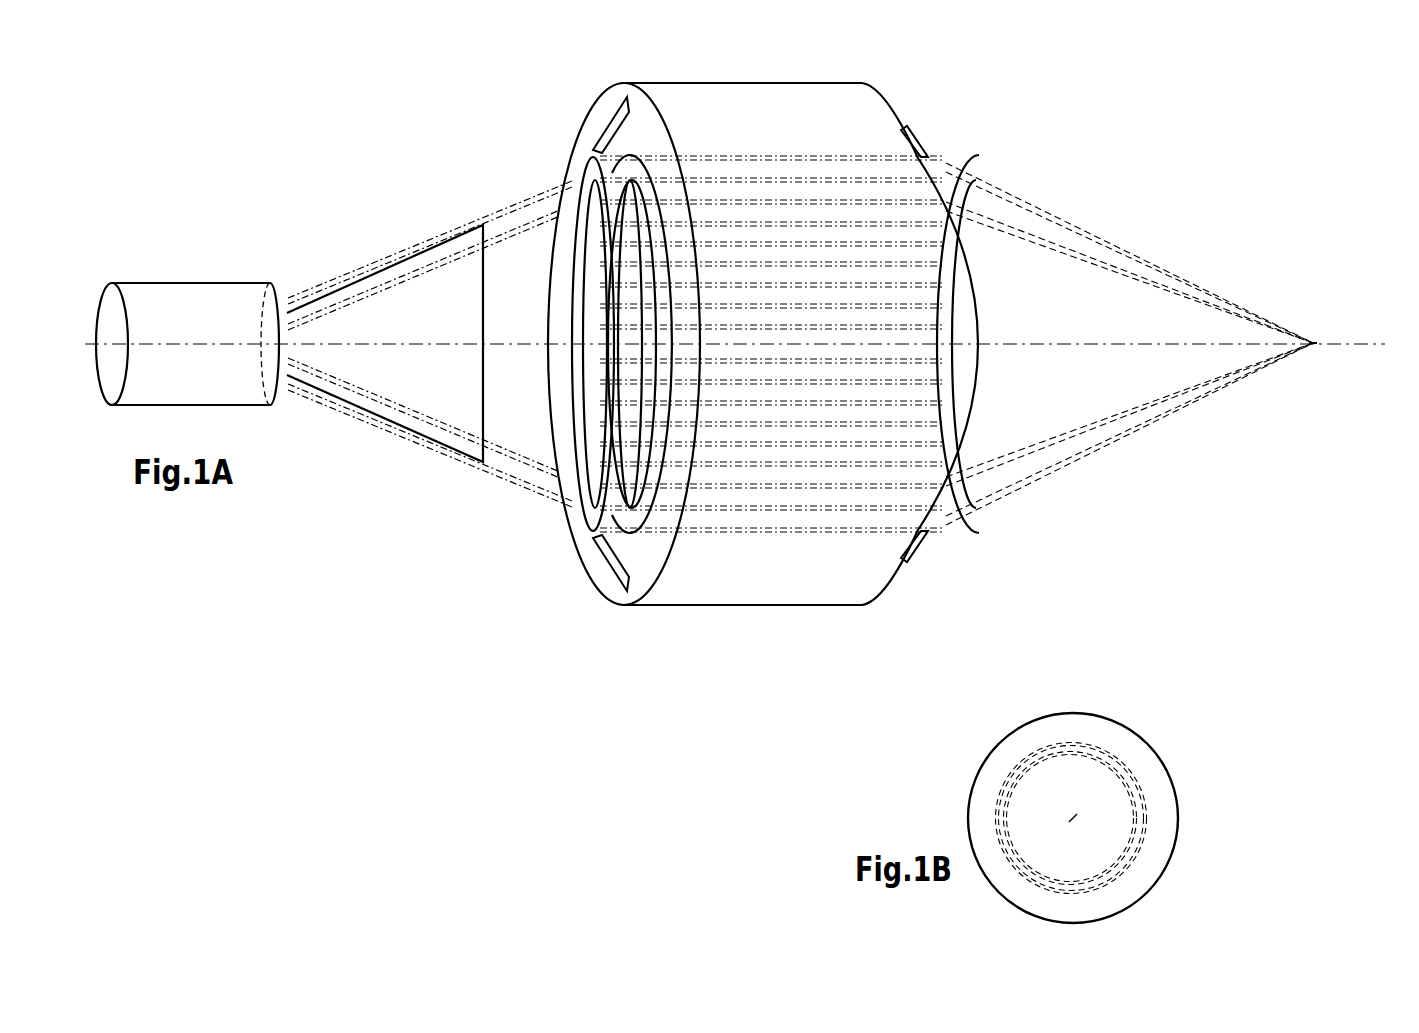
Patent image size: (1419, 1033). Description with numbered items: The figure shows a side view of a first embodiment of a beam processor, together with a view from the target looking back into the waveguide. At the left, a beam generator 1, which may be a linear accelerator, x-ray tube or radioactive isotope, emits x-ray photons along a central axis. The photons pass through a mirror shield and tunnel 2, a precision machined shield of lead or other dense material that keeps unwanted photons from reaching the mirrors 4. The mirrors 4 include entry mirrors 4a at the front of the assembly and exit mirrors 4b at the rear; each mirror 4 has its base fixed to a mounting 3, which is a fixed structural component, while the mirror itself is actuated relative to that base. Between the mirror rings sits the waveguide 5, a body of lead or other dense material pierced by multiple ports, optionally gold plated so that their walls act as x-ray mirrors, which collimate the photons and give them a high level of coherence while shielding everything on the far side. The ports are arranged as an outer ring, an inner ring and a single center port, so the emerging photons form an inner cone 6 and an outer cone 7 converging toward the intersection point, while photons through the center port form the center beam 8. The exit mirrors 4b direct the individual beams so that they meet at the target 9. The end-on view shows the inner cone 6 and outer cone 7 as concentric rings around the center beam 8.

In FIG. 1A, the beam generator 1 is at (187, 344).
In FIG. 1A, the mirror shield and tunnel 2 is at (378, 420).
In FIG. 1A, the mountings 3 is at (602, 559).
In FIG. 1A, the mirrors 4 is at (619, 514).
In FIG. 1A, the entry mirrors 4a is at (576, 173).
In FIG. 1A, the exit mirrors 4b is at (940, 168).
In FIG. 1A, the waveguide 5 is at (905, 577).
In FIG. 1A, the inner cone 6 is at (1045, 452).
In FIG. 1B, the inner cone 6 is at (1126, 857).
In FIG. 1A, the outer cone 7 is at (1088, 223).
In FIG. 1B, the outer cone 7 is at (1144, 788).
In FIG. 1A, the center beam 8 is at (736, 339).
In FIG. 1B, the center beam 8 is at (1077, 812).
In FIG. 1A, the target 9 is at (1323, 332).